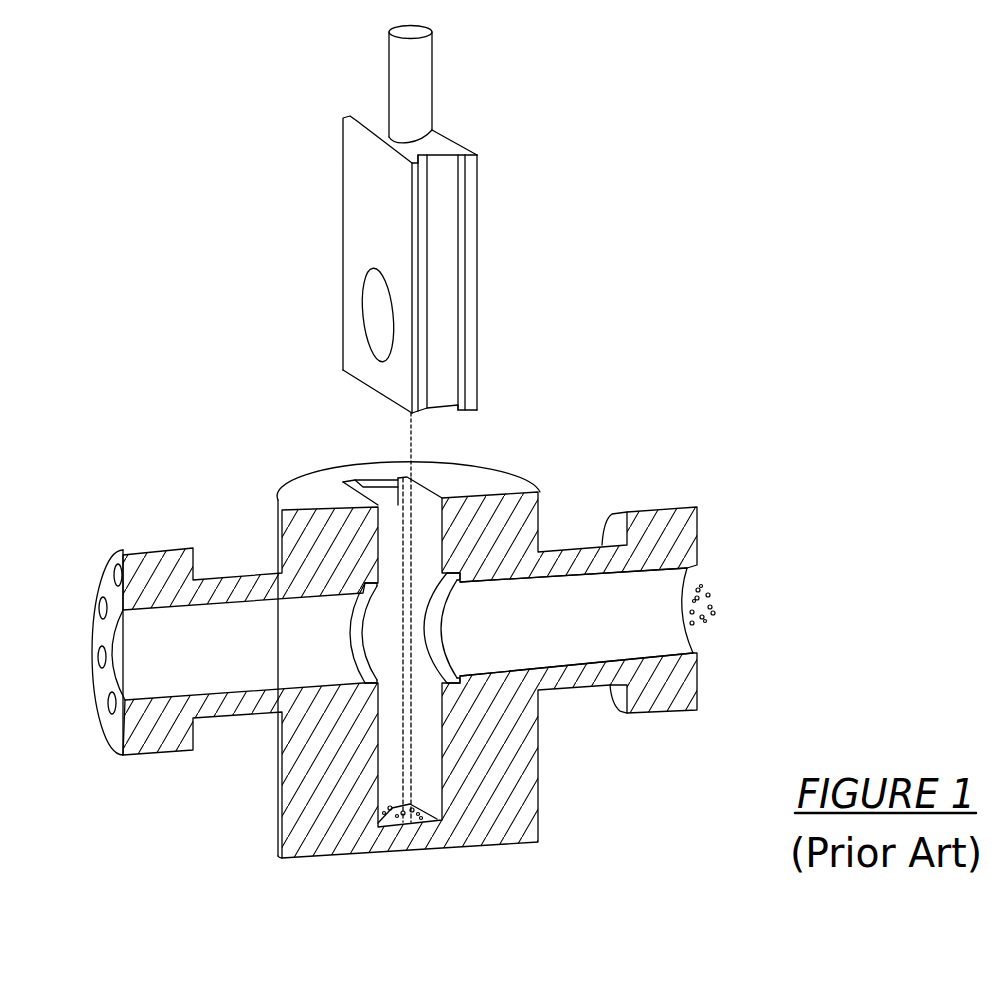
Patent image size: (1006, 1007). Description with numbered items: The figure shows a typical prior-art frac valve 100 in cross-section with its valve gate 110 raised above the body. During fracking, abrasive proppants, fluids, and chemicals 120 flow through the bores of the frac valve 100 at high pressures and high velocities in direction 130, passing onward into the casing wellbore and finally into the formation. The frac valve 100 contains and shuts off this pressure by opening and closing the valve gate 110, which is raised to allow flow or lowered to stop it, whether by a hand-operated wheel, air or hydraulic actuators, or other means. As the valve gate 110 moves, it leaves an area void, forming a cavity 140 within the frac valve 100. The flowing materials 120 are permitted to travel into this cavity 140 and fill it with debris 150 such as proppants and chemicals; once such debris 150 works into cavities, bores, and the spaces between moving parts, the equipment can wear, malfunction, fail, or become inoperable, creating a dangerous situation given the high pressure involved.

The frac valve 100 is at (302, 773).
The valve gate 110 is at (475, 275).
The abrasive proppants, fluids, and chemicals 120 is at (702, 630).
The flow direction 130 is at (723, 607).
The cavity 140 is at (437, 817).
The debris 150 is at (392, 817).